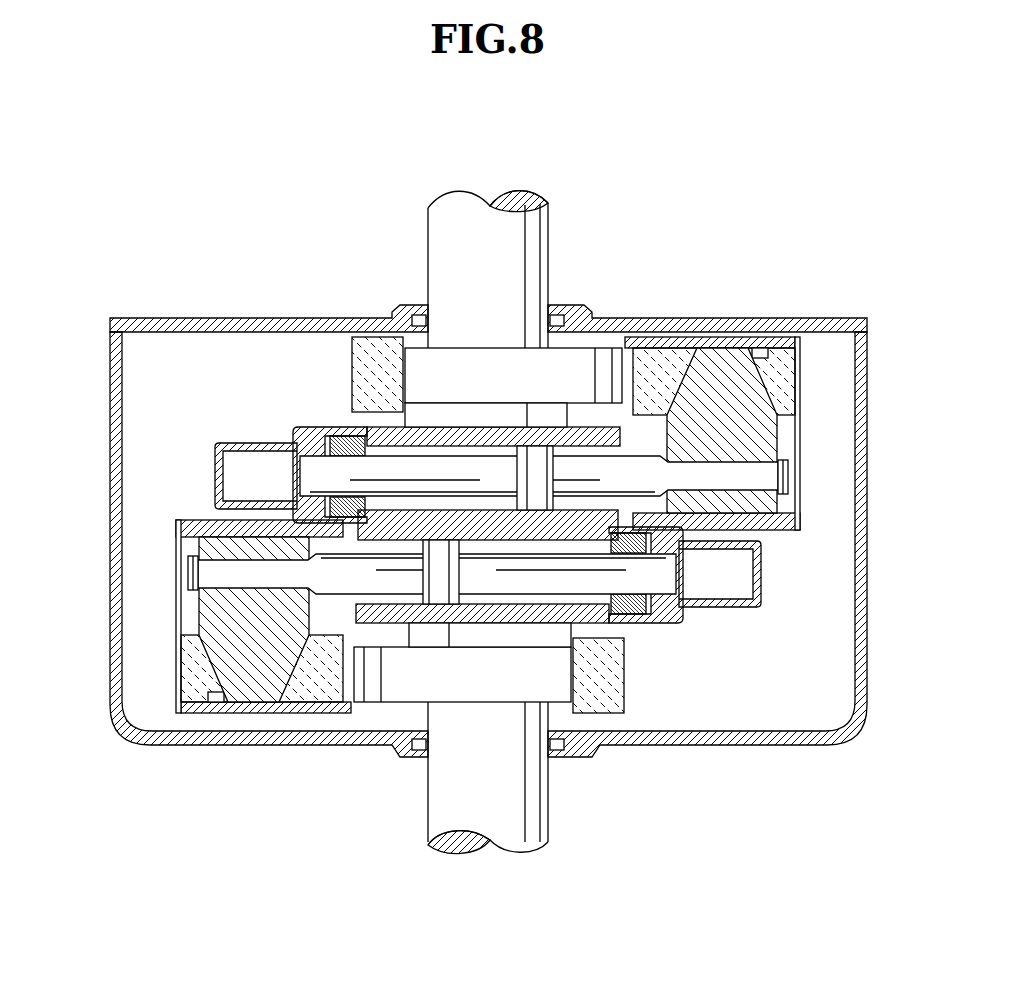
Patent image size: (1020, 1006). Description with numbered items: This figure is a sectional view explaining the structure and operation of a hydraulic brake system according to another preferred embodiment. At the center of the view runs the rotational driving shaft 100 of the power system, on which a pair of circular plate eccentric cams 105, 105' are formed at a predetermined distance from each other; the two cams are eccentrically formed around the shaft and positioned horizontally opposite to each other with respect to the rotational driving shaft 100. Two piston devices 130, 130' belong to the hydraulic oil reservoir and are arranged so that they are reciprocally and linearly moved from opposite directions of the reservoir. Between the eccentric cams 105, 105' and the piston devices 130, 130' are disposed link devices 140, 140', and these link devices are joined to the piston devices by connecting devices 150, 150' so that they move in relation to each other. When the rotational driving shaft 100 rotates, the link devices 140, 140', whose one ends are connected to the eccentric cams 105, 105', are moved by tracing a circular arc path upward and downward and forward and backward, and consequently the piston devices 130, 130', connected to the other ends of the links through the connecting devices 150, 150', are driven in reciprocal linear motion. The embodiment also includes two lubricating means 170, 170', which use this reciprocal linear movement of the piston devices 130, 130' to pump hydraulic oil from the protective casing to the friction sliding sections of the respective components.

The rotational driving shaft 100 is at (455, 208).
The eccentric cam 105 is at (521, 331).
The eccentric cam 105' is at (444, 731).
The piston device 130 is at (315, 388).
The piston device 130' is at (668, 672).
The link device 140 is at (360, 315).
The link device 140' is at (614, 738).
The connecting device 150 is at (781, 433).
The connecting device 150' is at (190, 616).
The lubricating means 170 is at (243, 381).
The lubricating means 170' is at (740, 679).